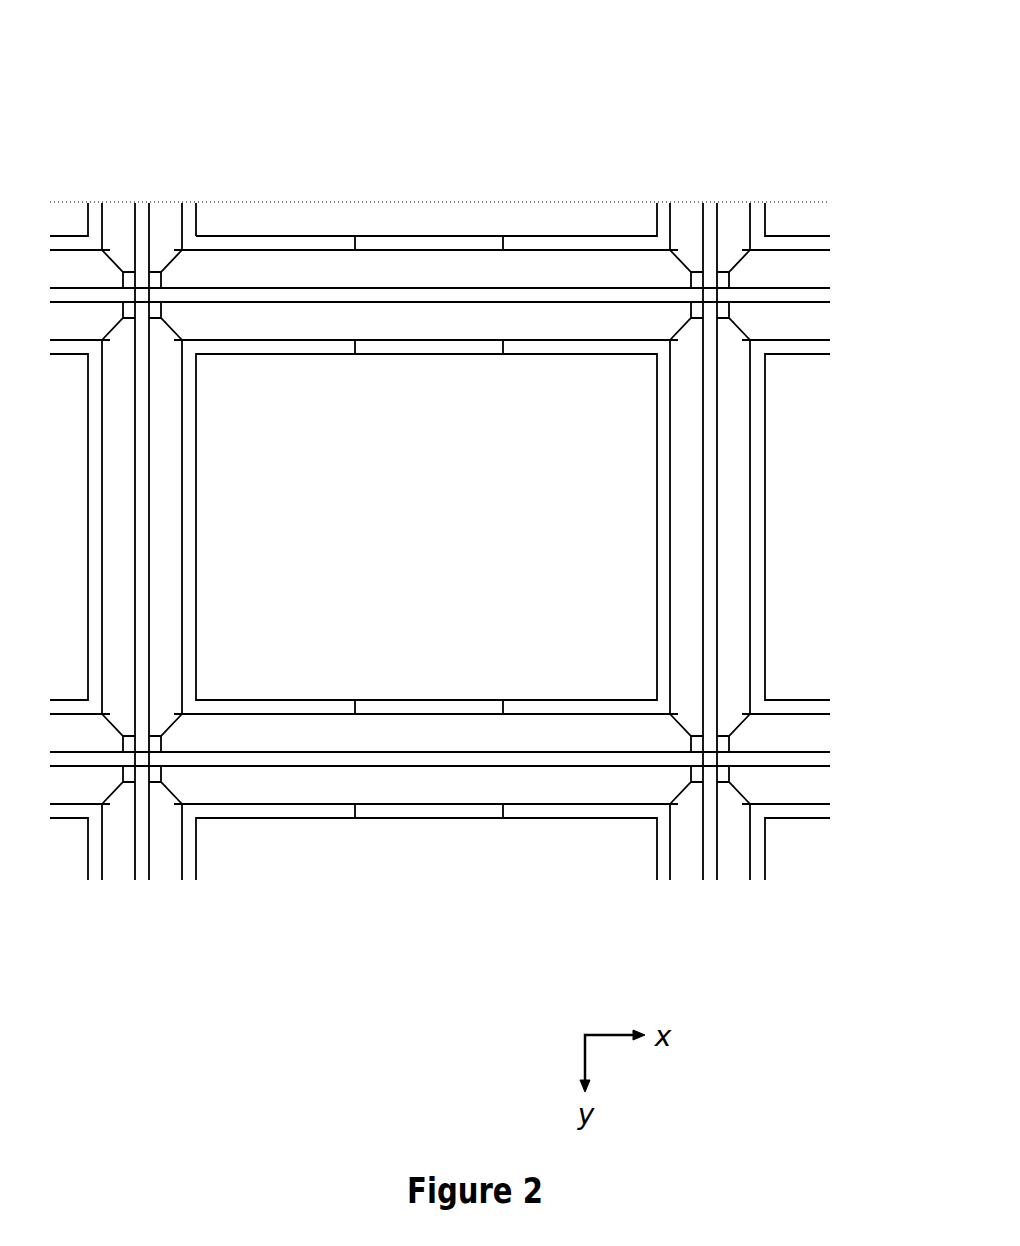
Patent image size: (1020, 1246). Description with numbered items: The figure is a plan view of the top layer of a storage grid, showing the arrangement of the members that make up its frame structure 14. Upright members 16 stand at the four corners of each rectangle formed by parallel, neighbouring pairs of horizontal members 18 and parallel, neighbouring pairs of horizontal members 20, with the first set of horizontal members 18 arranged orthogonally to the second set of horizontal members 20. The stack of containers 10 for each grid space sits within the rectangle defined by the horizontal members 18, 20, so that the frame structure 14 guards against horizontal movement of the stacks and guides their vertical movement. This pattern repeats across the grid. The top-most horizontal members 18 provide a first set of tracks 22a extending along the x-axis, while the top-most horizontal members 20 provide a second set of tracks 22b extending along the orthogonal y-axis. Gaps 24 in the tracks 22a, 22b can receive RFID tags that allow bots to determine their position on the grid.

The container 10 is at (72, 200).
The frame structure 14 is at (642, 140).
The upright member 16 is at (145, 292).
The horizontal member 18 is at (500, 275).
The horizontal member 20 is at (172, 448).
The first set of tracks 22a is at (385, 270).
The second set of tracks 22b is at (118, 378).
The gap 24 is at (427, 295).